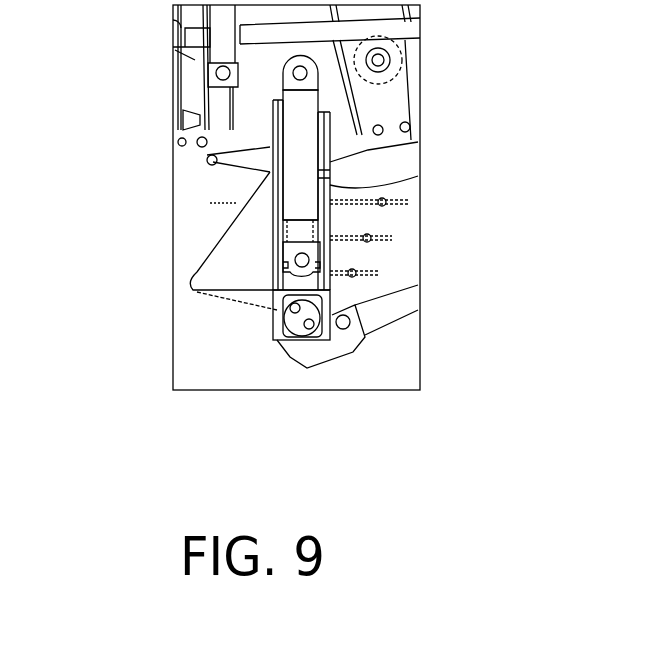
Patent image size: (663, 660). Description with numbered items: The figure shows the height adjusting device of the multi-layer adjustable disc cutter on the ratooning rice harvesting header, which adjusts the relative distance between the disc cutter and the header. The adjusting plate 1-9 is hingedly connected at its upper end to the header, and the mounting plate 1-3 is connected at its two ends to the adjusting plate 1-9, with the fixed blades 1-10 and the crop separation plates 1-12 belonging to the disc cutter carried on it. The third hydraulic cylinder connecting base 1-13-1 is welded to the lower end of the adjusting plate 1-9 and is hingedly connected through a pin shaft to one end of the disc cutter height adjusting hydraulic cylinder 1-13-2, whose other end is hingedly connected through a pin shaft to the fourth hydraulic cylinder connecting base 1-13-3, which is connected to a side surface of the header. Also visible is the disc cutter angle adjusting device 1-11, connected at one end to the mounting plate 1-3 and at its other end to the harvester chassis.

The adjusting plate 1-9 is at (283, 232).
The crop separation plates 1-12 is at (227, 267).
The fixed blades 1-10 is at (250, 293).
The mounting plate 1-3 is at (275, 333).
The fourth hydraulic cylinder connecting base 1-13-3 is at (316, 62).
The disc cutter height adjusting hydraulic cylinder 1-13-2 is at (307, 212).
The third hydraulic cylinder connecting base 1-13-1 is at (320, 262).
The disc cutter angle adjusting device 1-11 is at (400, 312).